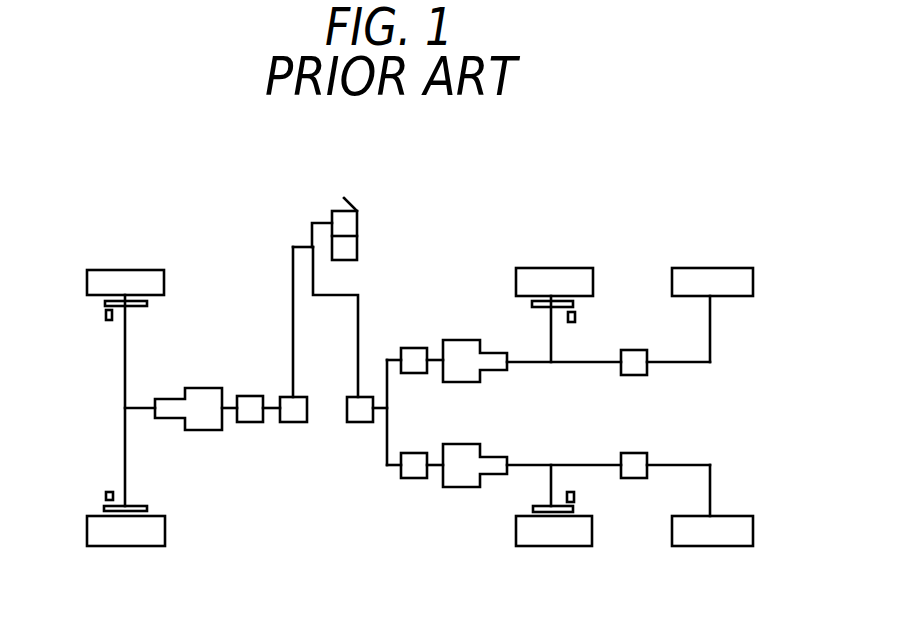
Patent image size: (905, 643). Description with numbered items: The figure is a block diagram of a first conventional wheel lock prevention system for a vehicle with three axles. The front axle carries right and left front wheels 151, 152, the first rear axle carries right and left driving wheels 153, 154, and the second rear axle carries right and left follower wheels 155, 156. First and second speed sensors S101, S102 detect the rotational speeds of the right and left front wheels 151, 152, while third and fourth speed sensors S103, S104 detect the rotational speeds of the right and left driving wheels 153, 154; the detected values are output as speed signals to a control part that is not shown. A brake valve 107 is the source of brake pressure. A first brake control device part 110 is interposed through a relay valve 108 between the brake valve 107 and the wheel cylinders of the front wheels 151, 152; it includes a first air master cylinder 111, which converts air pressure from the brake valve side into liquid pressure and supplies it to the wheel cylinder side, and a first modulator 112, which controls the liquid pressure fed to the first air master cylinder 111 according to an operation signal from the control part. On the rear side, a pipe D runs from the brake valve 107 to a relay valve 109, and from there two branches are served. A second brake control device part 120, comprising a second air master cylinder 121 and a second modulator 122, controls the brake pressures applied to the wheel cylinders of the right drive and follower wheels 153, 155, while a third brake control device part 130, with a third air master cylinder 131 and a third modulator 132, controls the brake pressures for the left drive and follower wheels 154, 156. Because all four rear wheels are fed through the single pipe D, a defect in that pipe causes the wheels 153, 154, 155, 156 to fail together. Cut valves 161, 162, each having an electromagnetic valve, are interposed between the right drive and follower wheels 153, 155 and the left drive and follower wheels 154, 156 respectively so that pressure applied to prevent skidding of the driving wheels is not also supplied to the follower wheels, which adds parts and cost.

The brake valve 107 is at (358, 227).
The pipe D is at (348, 293).
The relay valve 108 is at (293, 423).
The relay valve 109 is at (358, 423).
The first brake control device part 110 is at (226, 380).
The first air master cylinder 111 is at (197, 432).
The first modulator 112 is at (250, 423).
The second brake control device part 120 is at (431, 497).
The second air master cylinder 121 is at (465, 488).
The second modulator 122 is at (413, 479).
The third brake control device part 130 is at (457, 322).
The third air master cylinder 131 is at (458, 371).
The third modulator 132 is at (414, 348).
The right front wheel 151 is at (125, 540).
The left front wheel 152 is at (122, 278).
The right driving wheel 153 is at (555, 538).
The left driving wheel 154 is at (548, 278).
The right follower wheel 155 is at (713, 539).
The left follower wheel 156 is at (707, 277).
The cut valve 161 is at (633, 460).
The cut valve 162 is at (630, 376).
The first speed sensor S101 is at (107, 493).
The second speed sensor S102 is at (108, 317).
The third speed sensor S103 is at (580, 498).
The fourth speed sensor S104 is at (578, 317).